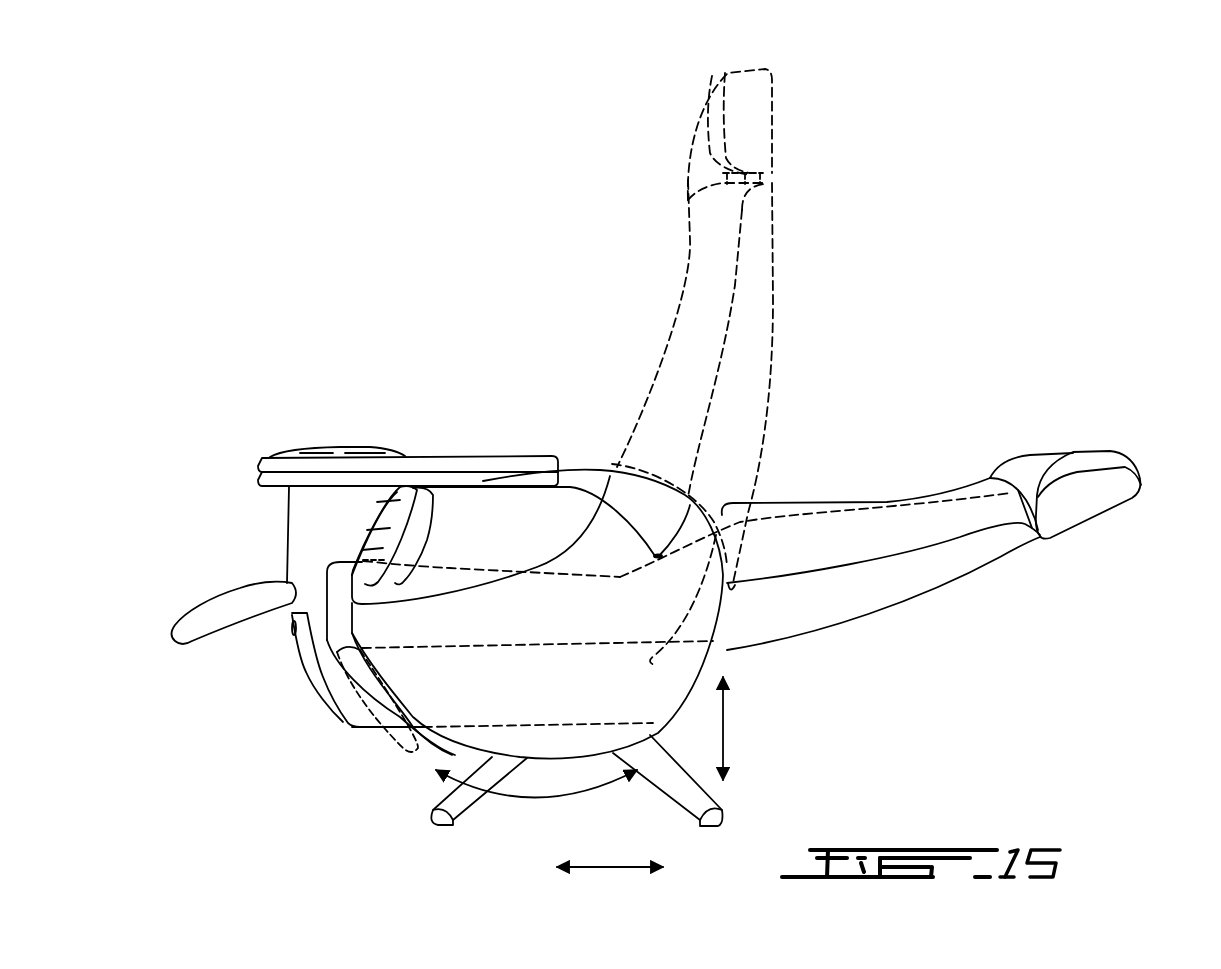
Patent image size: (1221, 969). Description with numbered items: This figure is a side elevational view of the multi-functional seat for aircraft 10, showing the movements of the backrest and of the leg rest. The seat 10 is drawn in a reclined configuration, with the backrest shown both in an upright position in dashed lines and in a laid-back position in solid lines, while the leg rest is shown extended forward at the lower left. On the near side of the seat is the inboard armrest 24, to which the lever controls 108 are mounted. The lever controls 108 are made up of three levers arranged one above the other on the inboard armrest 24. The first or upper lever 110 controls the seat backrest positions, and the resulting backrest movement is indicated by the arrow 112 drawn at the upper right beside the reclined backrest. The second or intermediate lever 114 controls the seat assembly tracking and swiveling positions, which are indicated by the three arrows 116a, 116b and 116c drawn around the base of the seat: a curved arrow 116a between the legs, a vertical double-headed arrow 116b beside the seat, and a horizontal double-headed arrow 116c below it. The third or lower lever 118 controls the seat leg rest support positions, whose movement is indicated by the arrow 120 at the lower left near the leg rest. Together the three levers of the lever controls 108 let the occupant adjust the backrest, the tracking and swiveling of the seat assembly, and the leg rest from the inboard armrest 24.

The multi-functional seat for aircraft 10 is at (832, 172).
The inboard armrest 24 is at (470, 506).
The lever controls 108 is at (421, 530).
The first or upper lever 110 is at (398, 488).
The arrow indicating backrest movement 112 is at (988, 113).
The second or intermediate lever 114 is at (383, 527).
The arrow indicating tracking/swiveling movement 116a is at (508, 800).
The arrow indicating tracking/swiveling movement 116b is at (723, 723).
The arrow indicating tracking/swiveling movement 116c is at (613, 870).
The third or lower lever 118 is at (365, 552).
The arrow indicating leg rest movement 120 is at (205, 685).